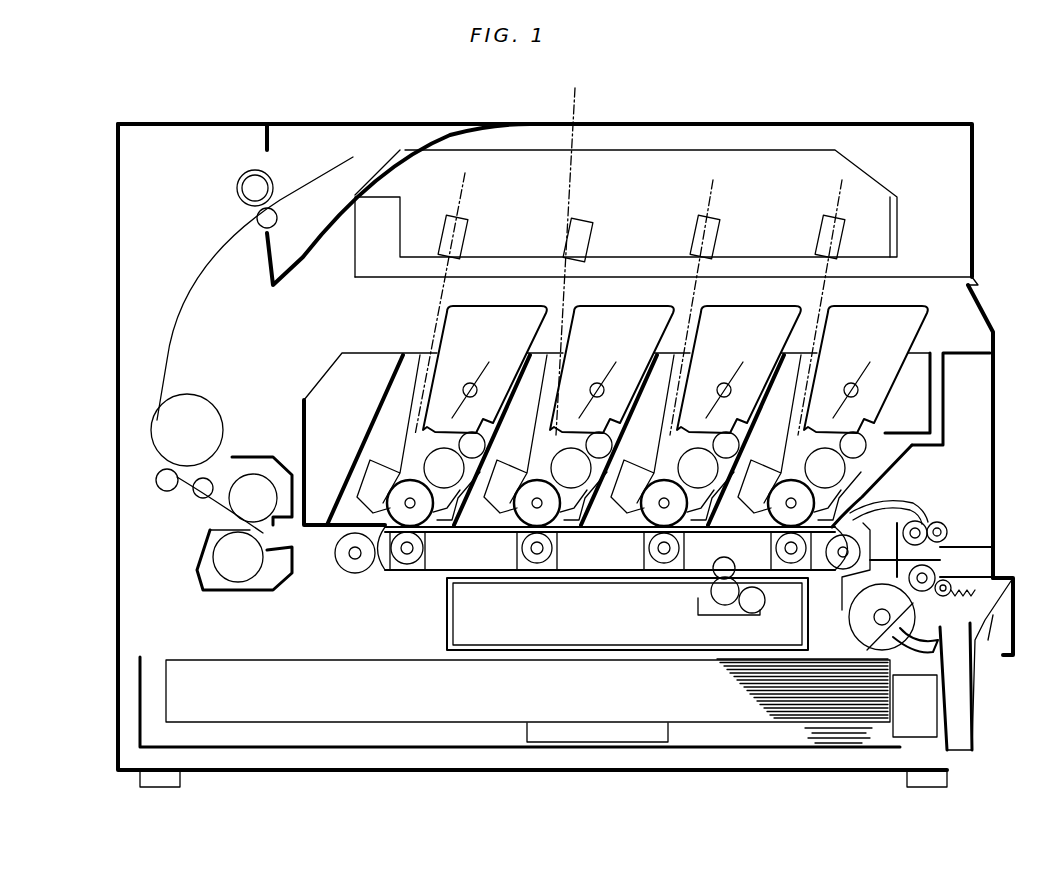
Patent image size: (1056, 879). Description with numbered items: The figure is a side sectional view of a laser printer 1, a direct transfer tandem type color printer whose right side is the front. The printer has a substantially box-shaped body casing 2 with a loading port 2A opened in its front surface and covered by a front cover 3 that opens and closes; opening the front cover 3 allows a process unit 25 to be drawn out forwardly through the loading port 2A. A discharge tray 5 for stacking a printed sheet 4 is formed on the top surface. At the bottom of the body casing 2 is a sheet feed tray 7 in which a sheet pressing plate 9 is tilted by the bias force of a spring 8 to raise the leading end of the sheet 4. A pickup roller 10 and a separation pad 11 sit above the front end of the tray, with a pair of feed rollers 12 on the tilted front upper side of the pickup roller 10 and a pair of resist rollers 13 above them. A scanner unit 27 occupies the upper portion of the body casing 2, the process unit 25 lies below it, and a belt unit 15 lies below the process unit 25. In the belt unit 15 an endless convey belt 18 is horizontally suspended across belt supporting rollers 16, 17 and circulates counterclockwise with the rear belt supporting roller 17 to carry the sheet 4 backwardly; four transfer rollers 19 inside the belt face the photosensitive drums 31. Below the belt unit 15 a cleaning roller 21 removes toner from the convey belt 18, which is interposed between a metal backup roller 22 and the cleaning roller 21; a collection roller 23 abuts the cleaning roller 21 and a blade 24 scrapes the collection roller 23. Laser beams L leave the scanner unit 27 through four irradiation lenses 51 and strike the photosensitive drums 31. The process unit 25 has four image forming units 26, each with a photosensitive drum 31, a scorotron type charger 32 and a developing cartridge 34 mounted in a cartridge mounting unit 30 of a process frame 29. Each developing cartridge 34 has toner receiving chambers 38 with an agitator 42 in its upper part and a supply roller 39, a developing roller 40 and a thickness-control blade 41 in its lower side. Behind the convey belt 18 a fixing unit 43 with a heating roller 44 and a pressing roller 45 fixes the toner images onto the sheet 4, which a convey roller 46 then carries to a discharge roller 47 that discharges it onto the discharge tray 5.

The laser printer 1 is at (873, 108).
The body casing 2 is at (203, 122).
The loading port 2A is at (980, 284).
The front cover 3 is at (995, 432).
The sheet 4 is at (352, 155).
The discharge tray 5 is at (402, 157).
The sheet feed tray 7 is at (448, 750).
The spring 8 is at (840, 728).
The sheet pressing plate 9 is at (662, 744).
The pickup roller 10 is at (902, 611).
The separation pad 11 is at (920, 632).
The feed rollers 12 is at (953, 587).
The resist rollers 13 is at (937, 538).
The belt unit 15 is at (393, 585).
The belt supporting roller 16 is at (843, 570).
The belt supporting roller 17 is at (352, 566).
The convey belt 18 is at (425, 574).
The transfer rollers 19 is at (537, 556).
The cleaning roller 21 is at (712, 598).
The backup roller 22 is at (715, 575).
The collection roller 23 is at (766, 601).
The blade 24 is at (740, 618).
The process unit 25 is at (958, 306).
The image forming units 26 is at (499, 300).
The scanner unit 27 is at (638, 160).
The process frame 29 is at (892, 447).
The cartridge mounting units 30 is at (596, 520).
The photosensitive drum 31 is at (517, 562).
The scorotron type charger 32 is at (497, 490).
The developing cartridge 34 is at (654, 306).
The toner receiving chambers 38 is at (601, 312).
The supply roller 39 is at (601, 440).
The developing roller 40 is at (572, 480).
The thickness-control blade 41 is at (572, 462).
The agitator 42 is at (605, 388).
The fixing unit 43 is at (215, 592).
The heating roller 44 is at (253, 498).
The pressing roller 45 is at (238, 557).
The convey roller 46 is at (198, 402).
The discharge roller 47 is at (268, 208).
The irradiation lenses 51 is at (588, 220).
The laser beams L is at (628, 247).